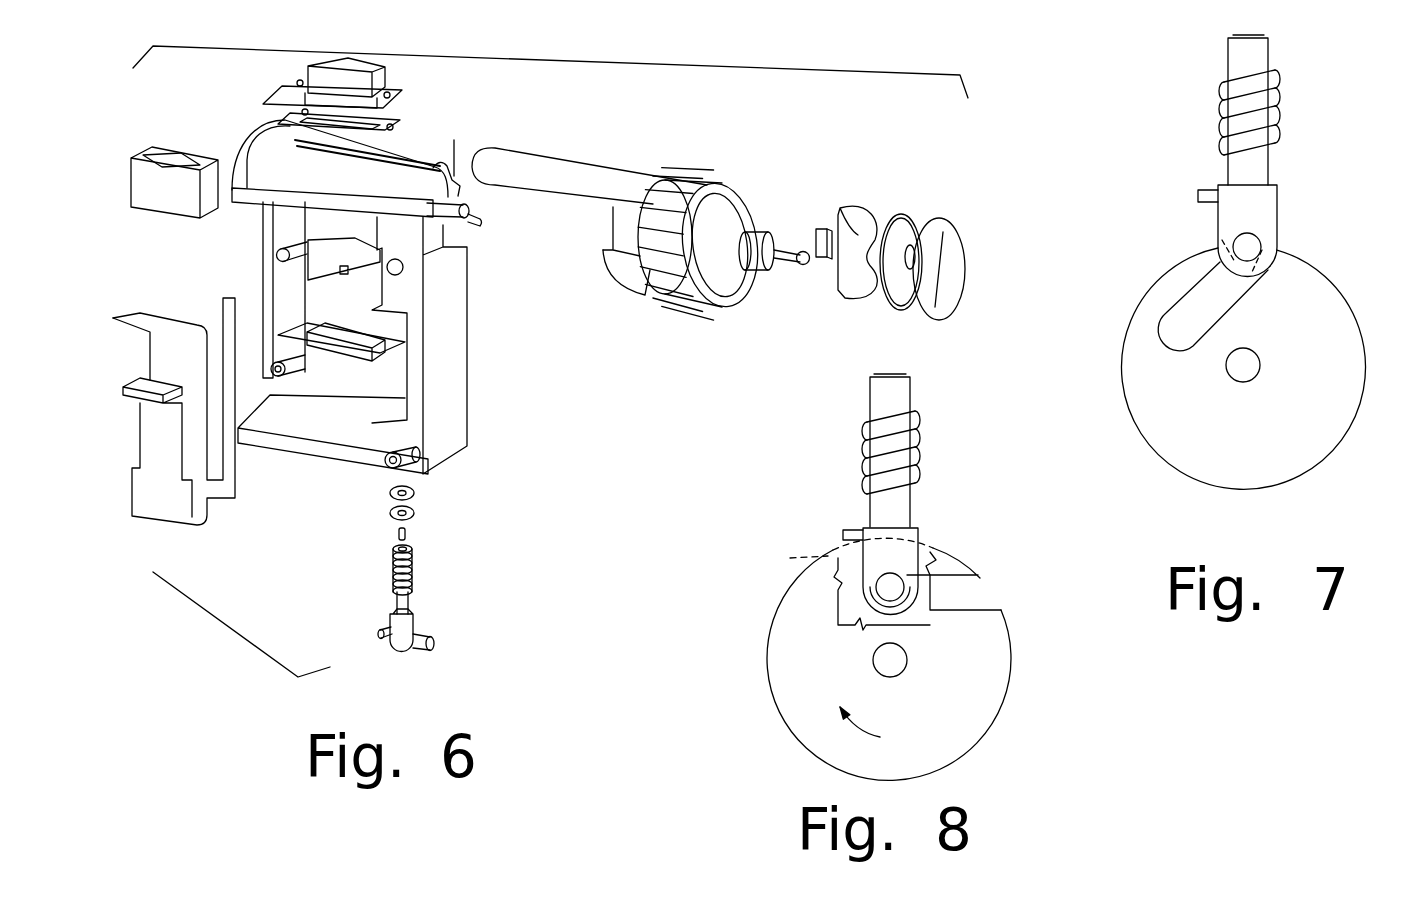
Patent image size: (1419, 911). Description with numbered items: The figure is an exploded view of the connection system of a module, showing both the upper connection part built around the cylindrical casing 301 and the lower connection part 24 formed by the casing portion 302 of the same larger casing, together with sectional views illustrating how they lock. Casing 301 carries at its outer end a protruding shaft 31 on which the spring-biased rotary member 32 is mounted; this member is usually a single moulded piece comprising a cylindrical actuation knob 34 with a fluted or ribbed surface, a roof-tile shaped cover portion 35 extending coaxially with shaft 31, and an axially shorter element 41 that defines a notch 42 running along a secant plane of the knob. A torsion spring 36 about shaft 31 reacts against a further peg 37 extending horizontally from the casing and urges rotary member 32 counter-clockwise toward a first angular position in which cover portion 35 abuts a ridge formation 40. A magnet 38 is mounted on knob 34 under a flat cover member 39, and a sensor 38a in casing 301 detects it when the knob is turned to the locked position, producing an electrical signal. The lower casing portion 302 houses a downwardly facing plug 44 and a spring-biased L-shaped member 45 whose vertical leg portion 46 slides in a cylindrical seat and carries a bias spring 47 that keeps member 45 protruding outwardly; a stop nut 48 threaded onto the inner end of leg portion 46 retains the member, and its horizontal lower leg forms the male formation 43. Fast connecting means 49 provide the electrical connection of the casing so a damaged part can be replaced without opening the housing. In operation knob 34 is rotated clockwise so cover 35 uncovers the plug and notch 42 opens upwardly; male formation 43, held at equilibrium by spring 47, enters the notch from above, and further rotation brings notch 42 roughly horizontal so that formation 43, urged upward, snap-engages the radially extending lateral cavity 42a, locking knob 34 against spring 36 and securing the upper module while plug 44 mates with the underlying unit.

In FIG. 6, the connection part 24 is at (478, 475).
In FIG. 6, the shaft 31 is at (470, 200).
In FIG. 6, the rotary member 32 is at (747, 153).
In FIG. 8, the rotary member 32 is at (787, 735).
In FIG. 7, the rotary member 32 is at (1283, 487).
In FIG. 6, the actuation knob 34 is at (673, 292).
In FIG. 8, the actuation knob 34 is at (973, 728).
In FIG. 7, the actuation knob 34 is at (1327, 325).
In FIG. 6, the cover portion 35 is at (557, 170).
In FIG. 6, the torsion spring 36 is at (723, 280).
In FIG. 6, the peg 37 is at (490, 230).
In FIG. 6, the magnet 38 is at (818, 227).
In FIG. 6, the sensor 38a is at (322, 227).
In FIG. 6, the flat cover member 39 is at (955, 250).
In FIG. 6, the ridge formation 40 is at (247, 158).
In FIG. 6, the axially shorter element 41 is at (618, 265).
In FIG. 7, the axially shorter element 41 is at (1175, 290).
In FIG. 6, the notch 42 is at (620, 218).
In FIG. 8, the notch 42 is at (977, 593).
In FIG. 7, the notch 42 is at (1227, 247).
In FIG. 8, the lateral cavity 42a is at (781, 558).
In FIG. 7, the lateral cavity 42a is at (1167, 323).
In FIG. 6, the male formation 43 is at (417, 643).
In FIG. 8, the male formation 43 is at (890, 587).
In FIG. 7, the male formation 43 is at (1250, 247).
In FIG. 6, the plug 44 is at (350, 352).
In FIG. 6, the L-shaped member 45 is at (384, 615).
In FIG. 8, the L-shaped member 45 is at (859, 494).
In FIG. 7, the L-shaped member 45 is at (1211, 150).
In FIG. 6, the vertical leg portion 46 is at (405, 604).
In FIG. 8, the vertical leg portion 46 is at (890, 517).
In FIG. 7, the vertical leg portion 46 is at (1247, 168).
In FIG. 6, the bias spring 47 is at (415, 560).
In FIG. 8, the bias spring 47 is at (890, 445).
In FIG. 7, the bias spring 47 is at (1243, 103).
In FIG. 6, the stop nut 48 is at (390, 497).
In FIG. 6, the fast connecting means 49 is at (127, 200).
In FIG. 6, the cylindrical casing 301 is at (452, 177).
In FIG. 6, the casing portion 302 is at (453, 427).